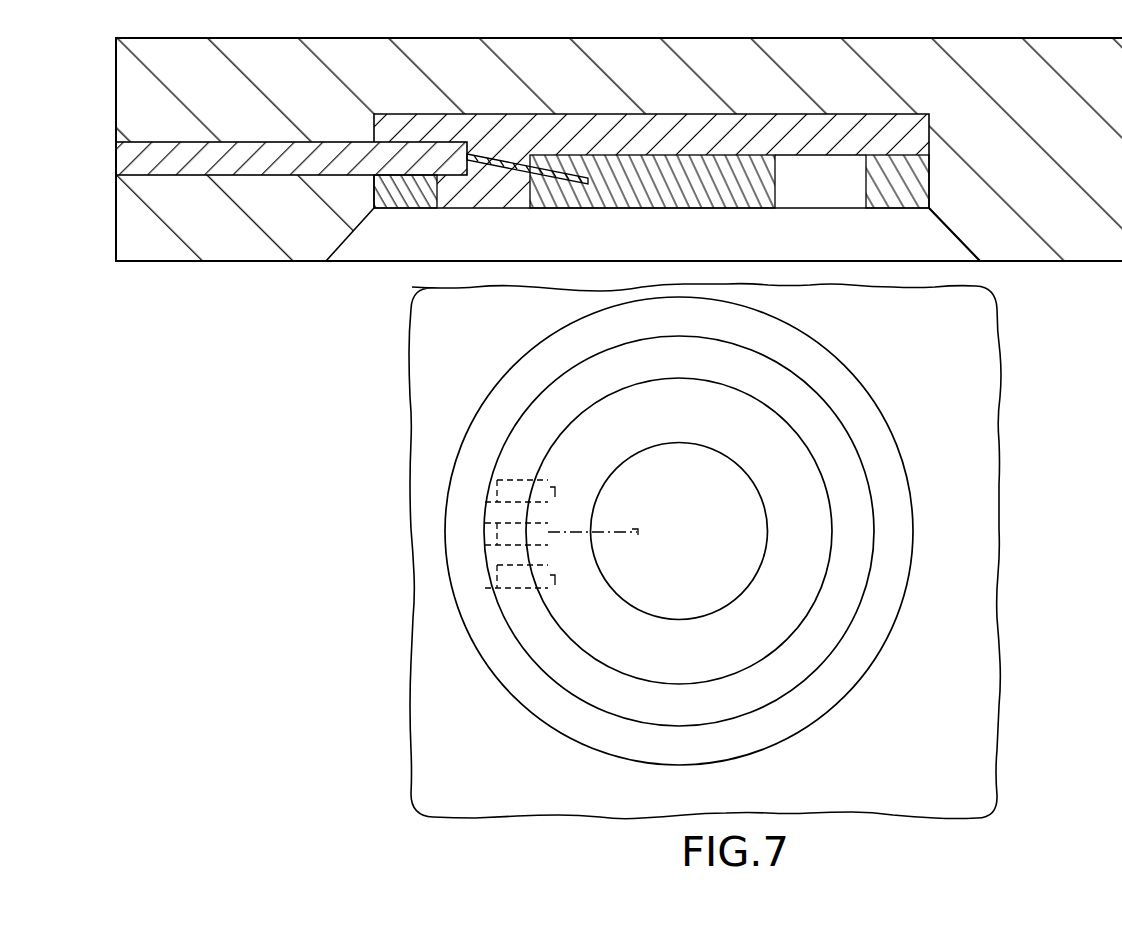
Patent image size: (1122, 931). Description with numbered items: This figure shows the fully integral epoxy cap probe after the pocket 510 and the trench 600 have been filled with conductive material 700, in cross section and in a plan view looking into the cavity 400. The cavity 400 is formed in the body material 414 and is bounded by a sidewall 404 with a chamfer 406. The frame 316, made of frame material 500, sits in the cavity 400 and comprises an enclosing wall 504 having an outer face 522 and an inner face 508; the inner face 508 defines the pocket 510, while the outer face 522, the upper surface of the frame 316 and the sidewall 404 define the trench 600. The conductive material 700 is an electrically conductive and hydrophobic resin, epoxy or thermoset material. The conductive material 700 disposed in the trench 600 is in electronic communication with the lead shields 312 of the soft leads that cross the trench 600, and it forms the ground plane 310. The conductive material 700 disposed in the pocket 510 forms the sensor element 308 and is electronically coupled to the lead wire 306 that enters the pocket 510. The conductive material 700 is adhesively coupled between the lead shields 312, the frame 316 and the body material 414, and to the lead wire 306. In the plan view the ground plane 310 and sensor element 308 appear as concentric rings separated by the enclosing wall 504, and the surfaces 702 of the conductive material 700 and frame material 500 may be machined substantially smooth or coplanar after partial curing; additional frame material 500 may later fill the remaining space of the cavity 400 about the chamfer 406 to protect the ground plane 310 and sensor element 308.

The cavity 400 is at (930, 112).
The body material 414 is at (611, 87).
The frame material 500 is at (639, 147).
The lead shield 312 is at (440, 176).
The conductive material 700 is at (638, 197).
The enclosing wall 504 is at (804, 195).
The lead wire 306 is at (493, 156).
The frame 316 is at (777, 127).
The pocket 510 is at (773, 152).
The trench 600 is at (930, 153).
The sensor element 308 is at (748, 198).
The surfaces 702 is at (572, 208).
The sidewall 404 is at (558, 379).
The ground plane 310 is at (850, 467).
The outer face 522 is at (603, 400).
The inner face 508 is at (648, 448).
The chamfer 406 is at (870, 637).